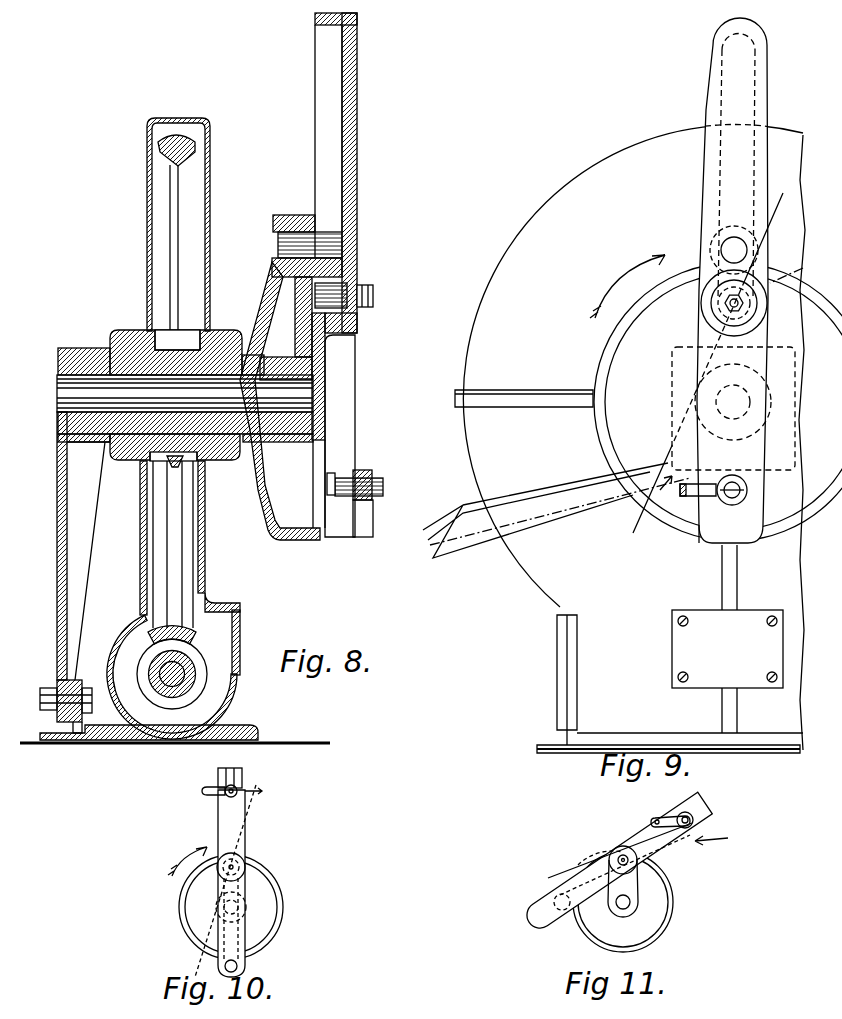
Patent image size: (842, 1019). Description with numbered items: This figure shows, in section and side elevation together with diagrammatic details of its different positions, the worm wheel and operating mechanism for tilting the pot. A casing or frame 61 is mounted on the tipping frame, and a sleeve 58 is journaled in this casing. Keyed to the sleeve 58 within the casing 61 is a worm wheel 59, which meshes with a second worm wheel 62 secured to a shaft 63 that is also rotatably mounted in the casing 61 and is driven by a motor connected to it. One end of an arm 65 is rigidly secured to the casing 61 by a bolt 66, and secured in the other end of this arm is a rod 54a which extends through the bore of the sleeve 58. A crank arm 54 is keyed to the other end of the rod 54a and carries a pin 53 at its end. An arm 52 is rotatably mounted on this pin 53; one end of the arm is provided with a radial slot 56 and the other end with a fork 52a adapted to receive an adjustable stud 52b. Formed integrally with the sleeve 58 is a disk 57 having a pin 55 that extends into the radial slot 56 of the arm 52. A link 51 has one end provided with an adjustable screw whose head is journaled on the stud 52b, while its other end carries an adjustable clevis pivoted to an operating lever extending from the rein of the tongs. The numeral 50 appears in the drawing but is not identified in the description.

In FIG. 10, the shaft 50 is at (246, 918).
In FIG. 9, the link 51 is at (697, 493).
In FIG. 10, the link 51 is at (210, 793).
In FIG. 11, the link 51 is at (655, 821).
In FIG. 8, the arm 52 is at (355, 275).
In FIG. 9, the arm 52 is at (705, 203).
In FIG. 10, the arm 52 is at (233, 821).
In FIG. 11, the arm 52 is at (660, 838).
In FIG. 8, the fork 52a is at (337, 514).
In FIG. 9, the fork 52a is at (732, 522).
In FIG. 10, the fork 52a is at (246, 784).
In FIG. 11, the fork 52a is at (695, 816).
In FIG. 8, the adjustable stud 52b is at (366, 482).
In FIG. 9, the adjustable stud 52b is at (748, 492).
In FIG. 8, the pin 53 is at (356, 297).
In FIG. 9, the pin 53 is at (725, 303).
In FIG. 10, the pin 53 is at (244, 865).
In FIG. 11, the pin 53 is at (619, 855).
In FIG. 8, the crank arm 54 is at (298, 355).
In FIG. 9, the crank arm 54 is at (716, 331).
In FIG. 11, the crank arm 54 is at (636, 889).
In FIG. 8, the rod 54a is at (84, 400).
In FIG. 8, the pin 55 is at (292, 241).
In FIG. 9, the pin 55 is at (722, 251).
In FIG. 10, the pin 55 is at (240, 968).
In FIG. 11, the pin 55 is at (555, 896).
In FIG. 8, the radial slot 56 is at (334, 118).
In FIG. 9, the radial slot 56 is at (757, 92).
In FIG. 11, the radial slot 56 is at (588, 905).
In FIG. 8, the disk 57 is at (262, 533).
In FIG. 9, the disk 57 is at (606, 357).
In FIG. 10, the disk 57 is at (283, 908).
In FIG. 11, the disk 57 is at (674, 913).
In FIG. 8, the sleeve 58 is at (215, 462).
In FIG. 8, the worm wheel 59 is at (166, 214).
In FIG. 8, the casing or frame 61 is at (208, 173).
In FIG. 9, the casing or frame 61 is at (629, 366).
In FIG. 8, the worm wheel 62 is at (198, 662).
In FIG. 8, the shaft 63 is at (188, 684).
In FIG. 8, the arm 65 is at (80, 572).
In FIG. 8, the bolt 66 is at (47, 700).